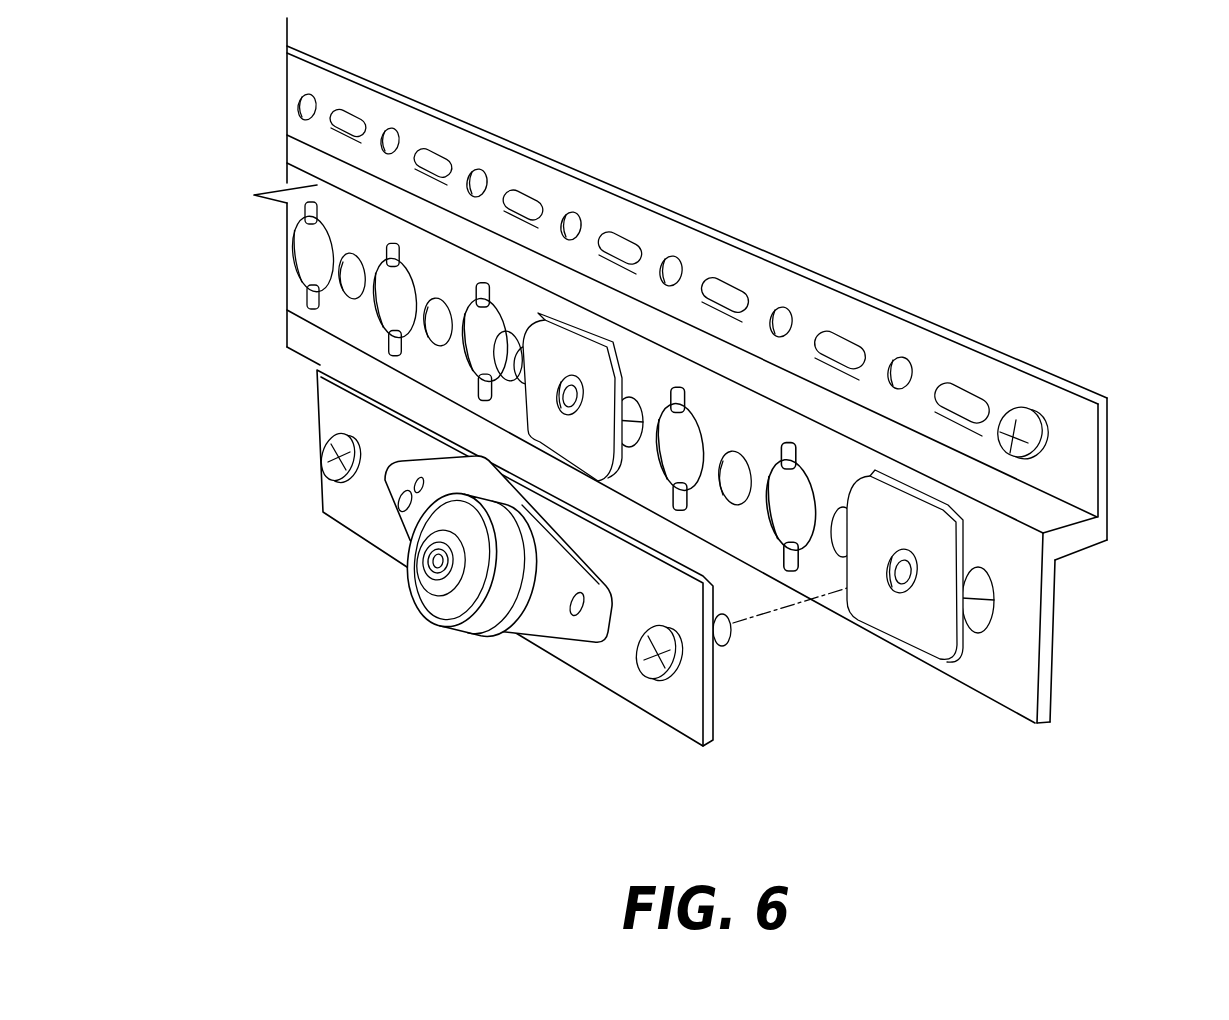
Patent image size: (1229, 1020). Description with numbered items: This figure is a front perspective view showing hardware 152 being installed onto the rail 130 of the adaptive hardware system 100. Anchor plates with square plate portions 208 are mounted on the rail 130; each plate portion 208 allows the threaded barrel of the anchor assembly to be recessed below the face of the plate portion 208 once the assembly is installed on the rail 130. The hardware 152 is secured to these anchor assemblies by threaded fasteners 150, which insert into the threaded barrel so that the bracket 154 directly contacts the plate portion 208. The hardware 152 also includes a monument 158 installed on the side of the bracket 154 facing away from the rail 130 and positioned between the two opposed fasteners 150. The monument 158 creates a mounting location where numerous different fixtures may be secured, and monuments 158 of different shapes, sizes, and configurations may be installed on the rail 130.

The mounting system 100 is at (1122, 716).
The rail 130 is at (806, 158).
The threaded fasteners 150 is at (337, 462).
The hardware 152 is at (245, 431).
The bracket 154 is at (640, 578).
The monument 158 is at (477, 581).
The square plate portion 208 is at (556, 350).